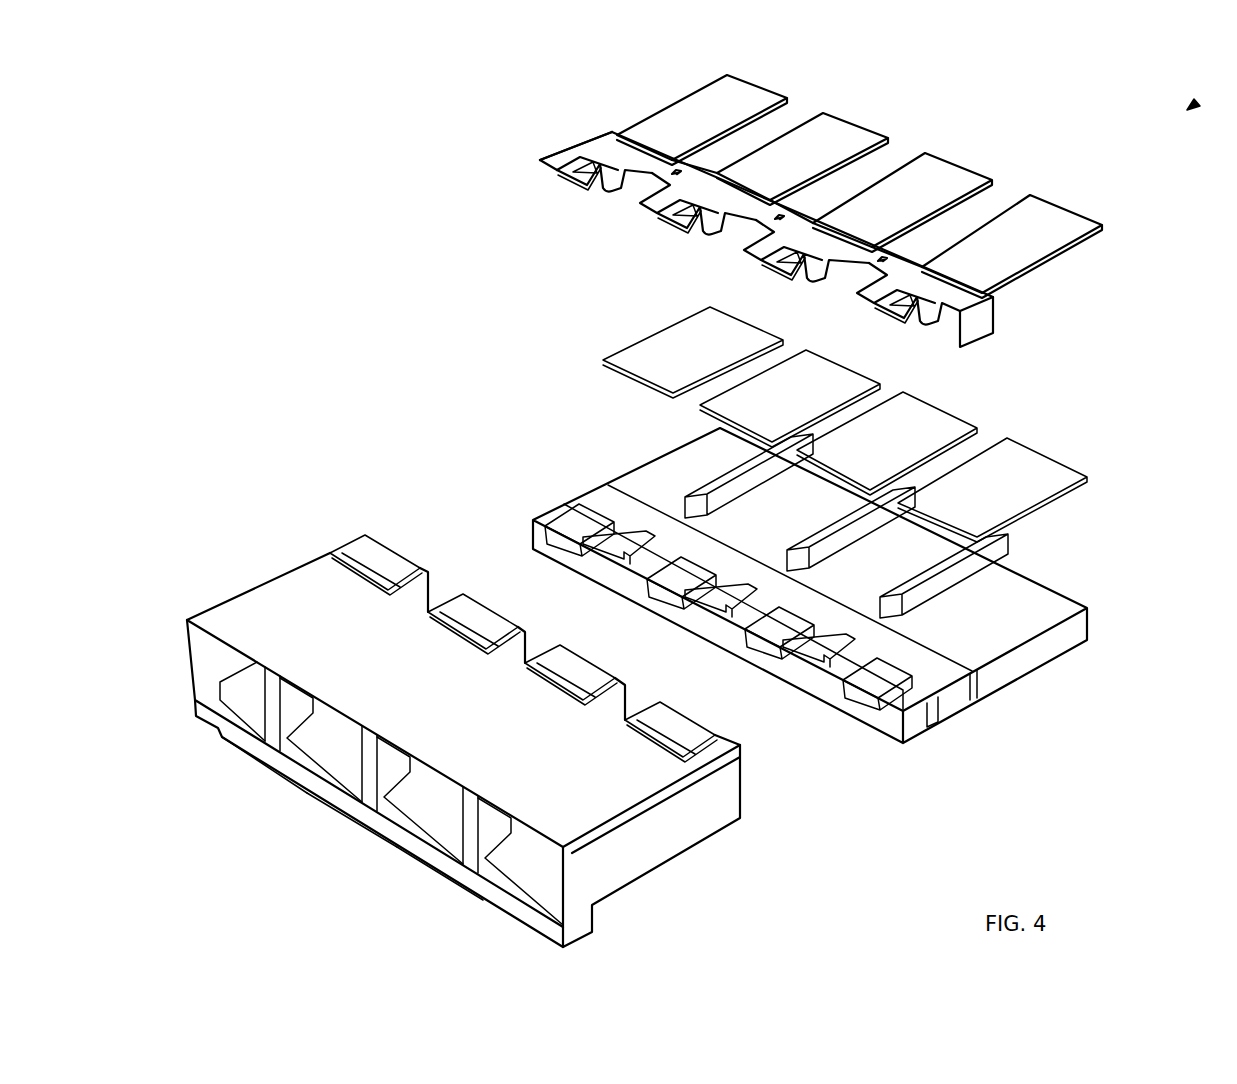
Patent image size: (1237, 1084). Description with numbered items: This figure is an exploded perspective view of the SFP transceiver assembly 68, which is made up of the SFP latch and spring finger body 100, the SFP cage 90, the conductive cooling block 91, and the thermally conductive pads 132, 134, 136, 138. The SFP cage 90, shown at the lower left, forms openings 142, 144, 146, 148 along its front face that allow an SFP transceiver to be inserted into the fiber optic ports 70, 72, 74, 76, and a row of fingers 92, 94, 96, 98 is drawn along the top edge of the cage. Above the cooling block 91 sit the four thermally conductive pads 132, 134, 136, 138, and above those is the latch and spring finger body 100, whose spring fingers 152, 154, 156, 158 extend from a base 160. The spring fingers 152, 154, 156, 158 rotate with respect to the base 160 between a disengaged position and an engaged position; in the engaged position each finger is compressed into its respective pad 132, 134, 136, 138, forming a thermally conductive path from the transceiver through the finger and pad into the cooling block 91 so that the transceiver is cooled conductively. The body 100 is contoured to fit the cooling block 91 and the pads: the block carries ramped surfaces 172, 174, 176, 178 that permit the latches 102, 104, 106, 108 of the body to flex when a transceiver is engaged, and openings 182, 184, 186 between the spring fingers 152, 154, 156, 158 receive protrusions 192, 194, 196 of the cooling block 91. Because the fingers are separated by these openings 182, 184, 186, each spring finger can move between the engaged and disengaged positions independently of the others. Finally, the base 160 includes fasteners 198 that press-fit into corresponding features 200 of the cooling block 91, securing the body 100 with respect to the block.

The SFP transceiver assembly 68 is at (1196, 104).
The fiber optic port 70 is at (461, 741).
The fiber optic port 72 is at (307, 803).
The fiber optic port 74 is at (397, 853).
The fiber optic port 76 is at (483, 910).
The SFP cage 90 is at (620, 772).
The conductive cooling block 91 is at (814, 606).
The latch finger 92 is at (383, 560).
The latch finger 94 is at (480, 610).
The latch finger 96 is at (570, 661).
The latch finger 98 is at (675, 718).
The SFP latch and spring finger body 100 is at (827, 198).
The latch 102 is at (572, 176).
The latch 104 is at (680, 221).
The latch 106 is at (784, 268).
The latch 108 is at (889, 310).
The thermally conductive pad 132 is at (653, 362).
The thermally conductive pad 134 is at (740, 403).
The thermally conductive pad 136 is at (955, 427).
The thermally conductive pad 138 is at (1062, 473).
The opening 142 is at (247, 685).
The opening 144 is at (332, 730).
The opening 146 is at (425, 787).
The opening 148 is at (522, 843).
The spring finger 152 is at (733, 107).
The spring finger 154 is at (840, 150).
The spring finger 156 is at (938, 193).
The spring finger 158 is at (1043, 235).
The base 160 is at (611, 150).
The ramped surface 172 is at (540, 528).
The ramped surface 174 is at (675, 590).
The ramped surface 176 is at (763, 638).
The ramped surface 178 is at (870, 687).
The opening 182 is at (757, 137).
The opening 184 is at (863, 170).
The opening 186 is at (973, 208).
The protrusion 192 is at (733, 498).
The protrusion 194 is at (840, 541).
The protrusion 196 is at (945, 582).
The fastener 198 is at (985, 322).
The feature 200 is at (940, 695).